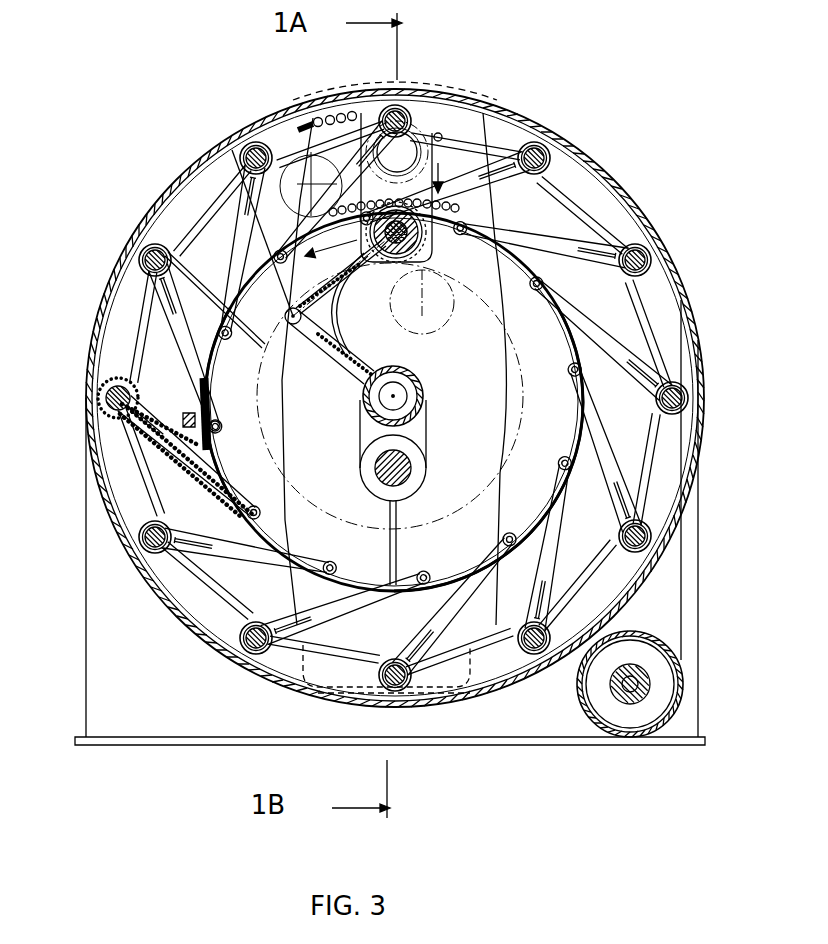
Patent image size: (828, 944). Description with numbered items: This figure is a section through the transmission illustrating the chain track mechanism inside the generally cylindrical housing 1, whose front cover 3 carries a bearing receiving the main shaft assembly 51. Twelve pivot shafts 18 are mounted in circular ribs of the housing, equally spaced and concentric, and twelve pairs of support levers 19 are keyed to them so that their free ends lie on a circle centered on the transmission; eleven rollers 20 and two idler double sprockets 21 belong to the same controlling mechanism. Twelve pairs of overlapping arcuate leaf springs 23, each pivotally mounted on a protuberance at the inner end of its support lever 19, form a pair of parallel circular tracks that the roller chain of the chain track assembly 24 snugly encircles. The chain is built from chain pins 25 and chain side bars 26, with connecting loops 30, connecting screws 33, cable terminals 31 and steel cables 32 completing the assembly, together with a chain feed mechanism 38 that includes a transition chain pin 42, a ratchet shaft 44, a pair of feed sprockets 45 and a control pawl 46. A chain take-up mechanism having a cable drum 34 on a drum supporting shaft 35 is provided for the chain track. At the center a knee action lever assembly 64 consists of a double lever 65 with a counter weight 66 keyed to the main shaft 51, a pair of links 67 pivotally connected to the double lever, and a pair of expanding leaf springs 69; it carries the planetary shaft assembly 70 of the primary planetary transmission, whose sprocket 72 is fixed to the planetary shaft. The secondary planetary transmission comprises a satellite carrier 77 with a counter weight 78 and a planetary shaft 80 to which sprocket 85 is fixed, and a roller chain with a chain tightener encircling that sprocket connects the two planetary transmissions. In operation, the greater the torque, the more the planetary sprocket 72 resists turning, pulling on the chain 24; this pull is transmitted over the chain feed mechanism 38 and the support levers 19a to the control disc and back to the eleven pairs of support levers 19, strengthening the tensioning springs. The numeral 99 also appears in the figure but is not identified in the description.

The housing 1 is at (606, 153).
The front cover 3 is at (90, 655).
The pivot shafts 18 is at (140, 254).
The support levers 19 is at (238, 257).
The support levers 19a is at (180, 282).
The rollers 20 is at (156, 238).
The idler double sprockets 21 is at (100, 386).
The leaf springs 23 is at (574, 437).
The chain track assembly 24 is at (220, 343).
The chain pins 25 is at (214, 372).
The chain side bars 26 is at (192, 366).
The connecting loops 30 is at (358, 110).
The cable terminals 31 is at (386, 100).
The steel cables 32 is at (681, 601).
The connecting screws 33 is at (364, 112).
The cable drum 34 is at (582, 712).
The drum supporting shaft 35 is at (613, 684).
The chain feed mechanism 38 is at (222, 426).
The transition chain pin 42 is at (206, 480).
The ratchet shaft 44 is at (186, 462).
The feed sprockets 45 is at (200, 408).
The control pawl 46 is at (184, 414).
The main shaft assembly 51 is at (426, 394).
The knee action lever assembly 64 is at (284, 315).
The double lever 65 is at (340, 372).
The counter weight 66 is at (422, 474).
The links 67 is at (322, 268).
The expanding leaf springs 69 is at (346, 304).
The planetary shaft assembly 70 is at (426, 236).
The sprocket 72 is at (358, 232).
The satellite carrier 77 is at (488, 204).
The counter weight 78 is at (470, 622).
The planetary shaft 80 is at (441, 136).
The sprocket 85 is at (400, 172).
The direction arrow 99 is at (440, 170).